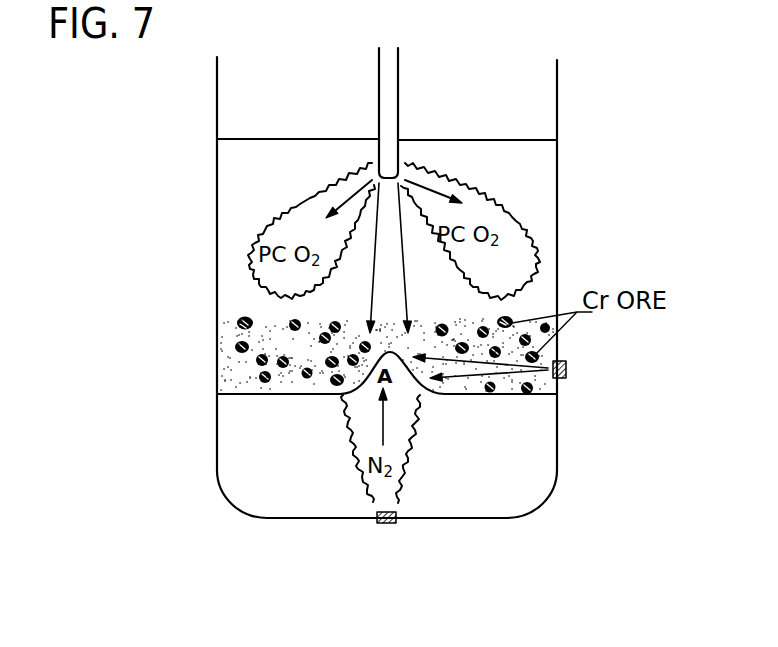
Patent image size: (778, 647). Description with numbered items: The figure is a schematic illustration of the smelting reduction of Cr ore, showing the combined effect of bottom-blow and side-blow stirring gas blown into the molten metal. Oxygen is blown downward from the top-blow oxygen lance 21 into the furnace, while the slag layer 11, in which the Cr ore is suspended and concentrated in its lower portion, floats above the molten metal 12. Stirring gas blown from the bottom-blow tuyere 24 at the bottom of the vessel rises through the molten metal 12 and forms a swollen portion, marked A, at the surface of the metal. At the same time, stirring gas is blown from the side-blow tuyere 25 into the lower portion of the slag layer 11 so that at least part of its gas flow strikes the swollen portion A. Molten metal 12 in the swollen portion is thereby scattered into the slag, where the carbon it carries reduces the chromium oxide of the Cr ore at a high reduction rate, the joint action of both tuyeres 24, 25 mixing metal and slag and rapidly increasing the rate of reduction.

The slag layer 11 is at (544, 185).
The molten metal 12 is at (548, 452).
The top-blow oxygen lance 21 is at (399, 59).
The bottom-blow tuyere 24 is at (388, 525).
The side-blow tuyere 25 is at (566, 369).